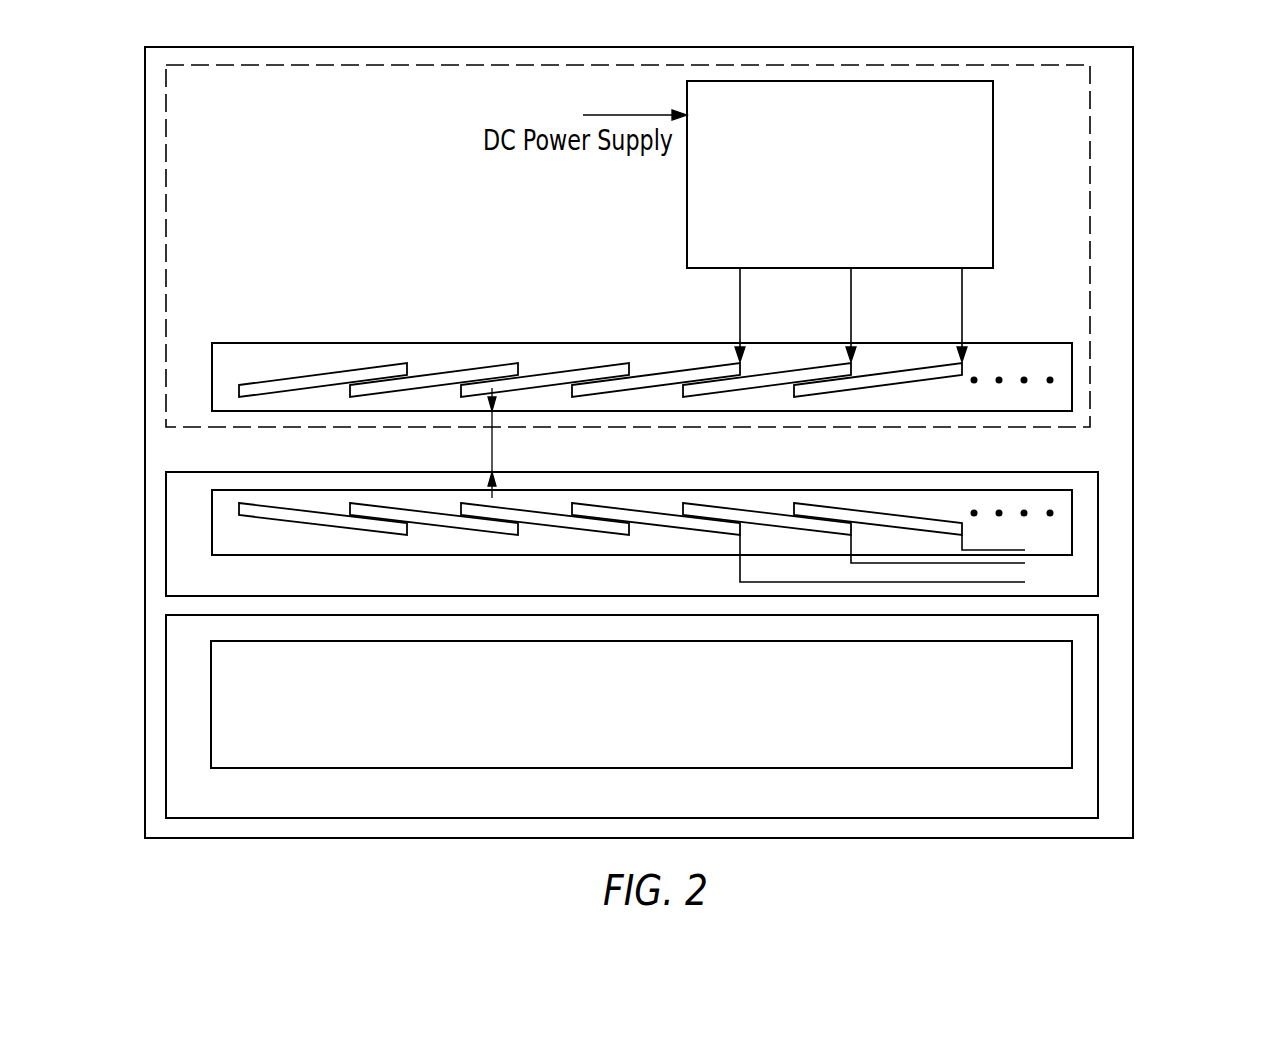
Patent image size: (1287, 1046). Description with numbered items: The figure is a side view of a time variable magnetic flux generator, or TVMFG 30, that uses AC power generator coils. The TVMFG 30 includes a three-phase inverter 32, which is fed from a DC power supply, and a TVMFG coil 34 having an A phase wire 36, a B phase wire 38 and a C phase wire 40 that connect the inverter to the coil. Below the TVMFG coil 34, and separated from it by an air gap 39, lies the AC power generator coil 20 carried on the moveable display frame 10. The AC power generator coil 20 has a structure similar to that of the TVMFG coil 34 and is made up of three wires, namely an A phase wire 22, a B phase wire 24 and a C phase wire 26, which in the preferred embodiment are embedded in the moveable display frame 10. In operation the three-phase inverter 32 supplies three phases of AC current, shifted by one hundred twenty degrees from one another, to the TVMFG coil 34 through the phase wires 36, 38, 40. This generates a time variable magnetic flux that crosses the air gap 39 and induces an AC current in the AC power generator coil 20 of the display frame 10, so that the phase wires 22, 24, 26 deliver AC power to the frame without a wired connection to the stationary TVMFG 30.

The moveable display frame 10 is at (1088, 490).
The AC power generator coil 20 is at (1052, 480).
The A phase wire 22 is at (1025, 550).
The B phase wire 24 is at (1025, 563).
The C phase wire 26 is at (1025, 582).
The TVMFG 30 is at (380, 66).
The three-phase inverter 32 is at (857, 223).
The TVMFG coil 34 is at (307, 343).
The A phase wire 36 is at (962, 301).
The B phase wire 38 is at (851, 301).
The air gap 39 is at (492, 448).
The C phase wire 40 is at (740, 301).